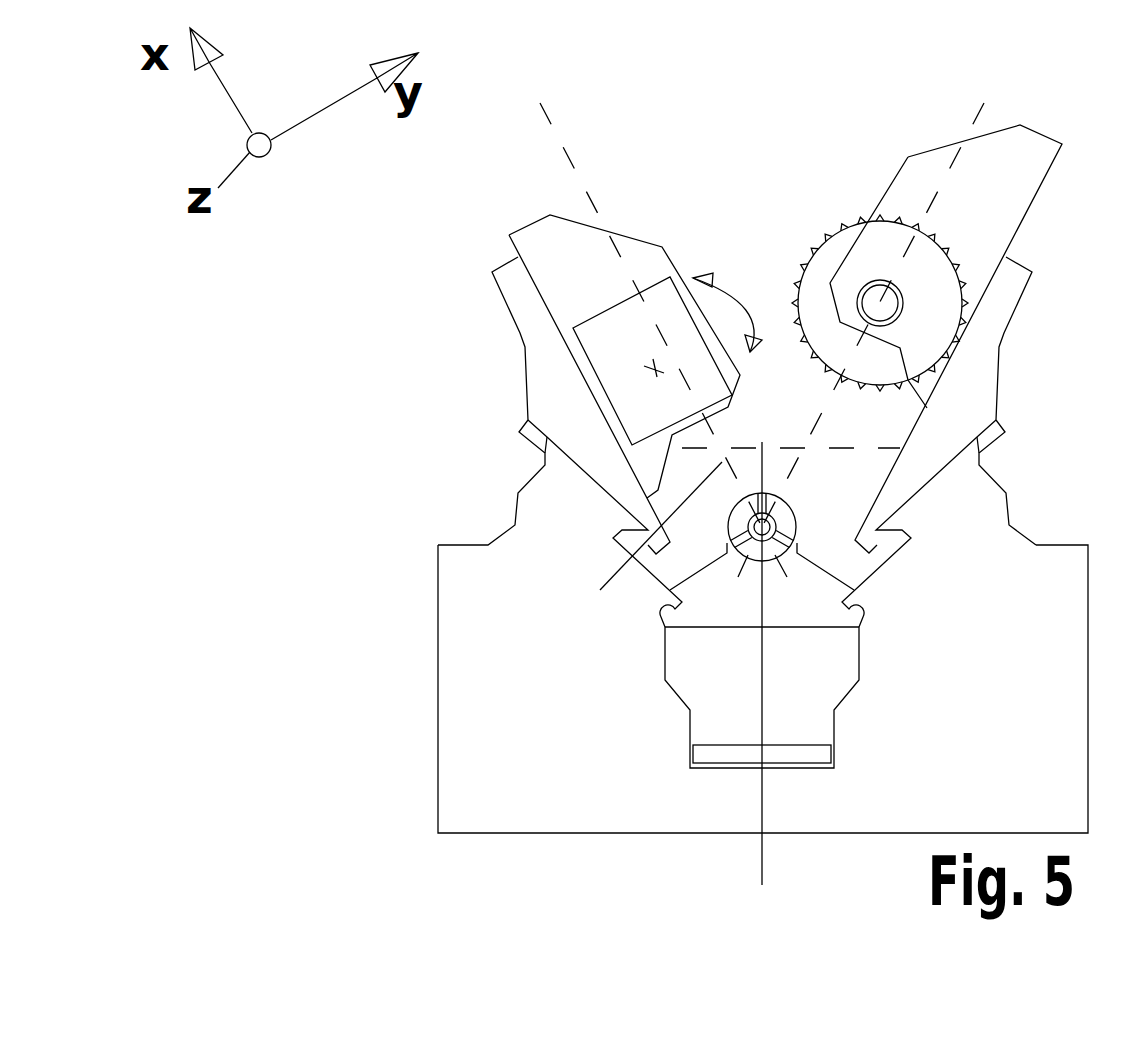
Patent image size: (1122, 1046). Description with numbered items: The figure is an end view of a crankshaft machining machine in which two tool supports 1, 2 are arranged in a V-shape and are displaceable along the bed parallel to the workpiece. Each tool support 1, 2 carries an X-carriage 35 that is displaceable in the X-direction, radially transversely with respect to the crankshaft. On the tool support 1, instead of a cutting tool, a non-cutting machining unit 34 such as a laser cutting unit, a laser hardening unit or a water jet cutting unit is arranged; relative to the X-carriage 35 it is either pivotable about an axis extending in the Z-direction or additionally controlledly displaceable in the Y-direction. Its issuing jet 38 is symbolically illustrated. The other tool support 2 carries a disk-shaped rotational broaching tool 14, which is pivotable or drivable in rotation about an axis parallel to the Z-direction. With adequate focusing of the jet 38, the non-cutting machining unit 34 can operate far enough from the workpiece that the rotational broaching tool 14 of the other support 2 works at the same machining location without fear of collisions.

The tool support 1 is at (763, 545).
The tool support 2 is at (946, 376).
The rotational broaching tool 14 is at (828, 237).
The non-cutting machining unit 34 is at (652, 361).
The X-carriage 35 is at (635, 384).
The issuing jet 38 is at (670, 590).